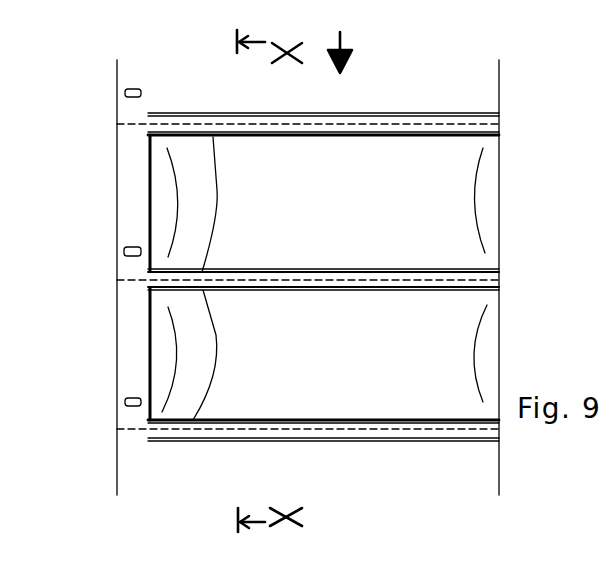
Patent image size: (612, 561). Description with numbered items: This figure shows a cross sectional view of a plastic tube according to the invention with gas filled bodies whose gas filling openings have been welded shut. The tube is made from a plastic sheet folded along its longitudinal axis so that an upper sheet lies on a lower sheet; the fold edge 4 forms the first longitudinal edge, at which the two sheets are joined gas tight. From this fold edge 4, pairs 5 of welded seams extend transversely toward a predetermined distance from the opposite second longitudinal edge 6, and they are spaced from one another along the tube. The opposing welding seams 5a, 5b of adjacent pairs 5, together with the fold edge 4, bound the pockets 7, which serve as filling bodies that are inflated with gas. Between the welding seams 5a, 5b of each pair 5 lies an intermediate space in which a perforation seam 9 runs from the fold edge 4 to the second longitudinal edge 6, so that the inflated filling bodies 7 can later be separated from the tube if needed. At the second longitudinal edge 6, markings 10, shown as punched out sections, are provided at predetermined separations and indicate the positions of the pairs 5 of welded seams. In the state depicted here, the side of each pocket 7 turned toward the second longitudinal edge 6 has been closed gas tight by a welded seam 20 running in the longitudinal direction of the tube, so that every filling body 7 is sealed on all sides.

The fold edge 4 is at (500, 172).
The pairs of welded seams 5 is at (387, 136).
The welding seam 5a is at (326, 204).
The welding seam 5b is at (324, 355).
The second longitudinal edge 6 is at (117, 120).
The pocket 7 is at (315, 218).
The perforation seam 9 is at (478, 279).
The markings 10 is at (128, 252).
The welded seam 20 is at (149, 190).